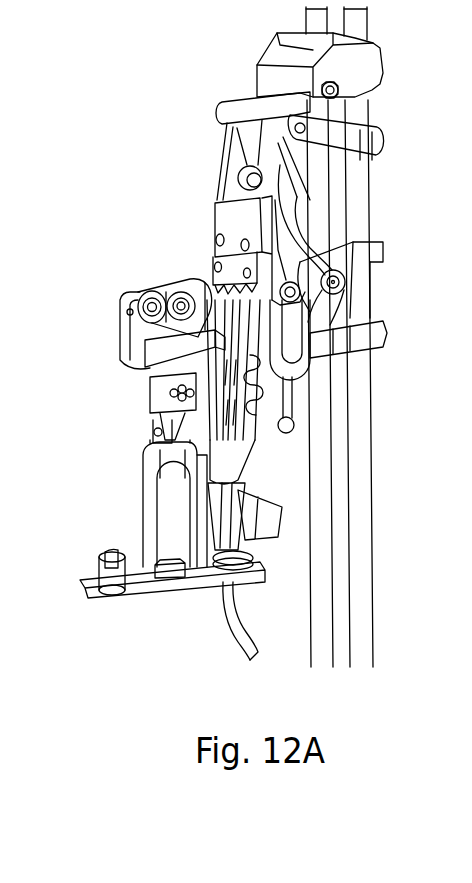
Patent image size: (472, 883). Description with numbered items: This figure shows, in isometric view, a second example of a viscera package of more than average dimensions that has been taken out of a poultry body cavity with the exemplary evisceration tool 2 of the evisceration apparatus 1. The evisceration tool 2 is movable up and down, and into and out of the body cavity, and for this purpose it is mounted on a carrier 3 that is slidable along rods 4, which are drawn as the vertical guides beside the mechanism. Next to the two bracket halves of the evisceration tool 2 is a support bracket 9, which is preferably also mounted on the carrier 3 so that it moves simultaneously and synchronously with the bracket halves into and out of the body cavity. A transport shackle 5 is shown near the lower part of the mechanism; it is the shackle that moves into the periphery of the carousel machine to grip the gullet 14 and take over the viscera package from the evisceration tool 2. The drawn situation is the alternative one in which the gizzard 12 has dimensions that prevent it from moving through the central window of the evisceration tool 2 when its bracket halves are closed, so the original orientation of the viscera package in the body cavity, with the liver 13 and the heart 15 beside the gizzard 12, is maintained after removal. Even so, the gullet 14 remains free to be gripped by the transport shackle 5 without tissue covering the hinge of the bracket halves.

The evisceration apparatus 1 is at (393, 270).
The evisceration tool 2 is at (277, 433).
The carrier 3 is at (227, 210).
The rods 4 is at (318, 415).
The transport shackle 5 is at (147, 498).
The support bracket 9 is at (215, 404).
The gizzard 12 is at (248, 445).
The liver 13 is at (240, 495).
The gullet 14 is at (215, 607).
The heart 15 is at (225, 542).